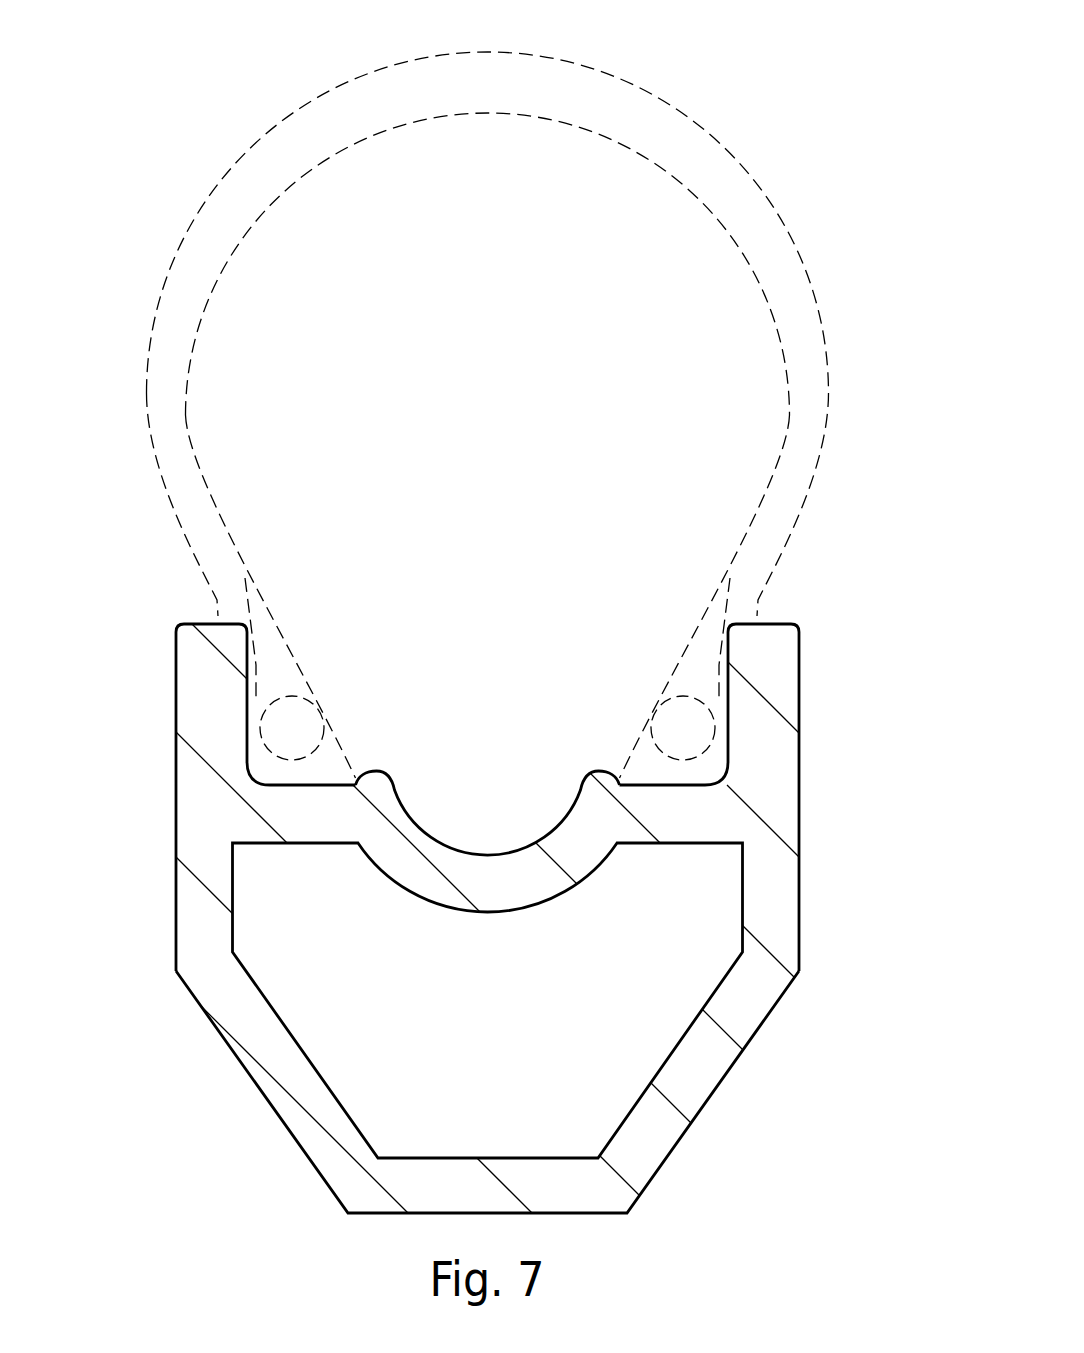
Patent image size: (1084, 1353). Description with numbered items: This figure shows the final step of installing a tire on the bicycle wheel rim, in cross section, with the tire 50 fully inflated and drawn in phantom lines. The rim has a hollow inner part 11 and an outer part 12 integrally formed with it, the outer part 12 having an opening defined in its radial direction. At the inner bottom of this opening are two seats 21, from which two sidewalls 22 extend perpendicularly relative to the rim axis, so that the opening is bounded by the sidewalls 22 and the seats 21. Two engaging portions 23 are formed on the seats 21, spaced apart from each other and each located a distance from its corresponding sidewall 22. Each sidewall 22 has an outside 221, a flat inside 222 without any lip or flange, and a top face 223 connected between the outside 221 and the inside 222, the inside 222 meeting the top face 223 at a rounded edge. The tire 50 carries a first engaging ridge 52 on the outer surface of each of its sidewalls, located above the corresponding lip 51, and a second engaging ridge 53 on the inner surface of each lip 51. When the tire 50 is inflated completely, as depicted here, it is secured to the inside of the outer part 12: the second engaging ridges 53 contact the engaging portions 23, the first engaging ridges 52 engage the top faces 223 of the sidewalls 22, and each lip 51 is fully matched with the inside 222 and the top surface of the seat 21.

The inner part 11 is at (670, 1118).
The outer part 12 is at (512, 389).
The seat 21 is at (313, 820).
The sidewall 22 is at (192, 694).
The engaging portion 23 is at (390, 774).
The outside 221 is at (800, 690).
The inside 222 is at (727, 681).
The top face 223 is at (763, 637).
The tire 50 is at (331, 90).
The lip 51 is at (305, 700).
The first engaging ridge 52 is at (213, 610).
The second engaging ridge 53 is at (360, 768).